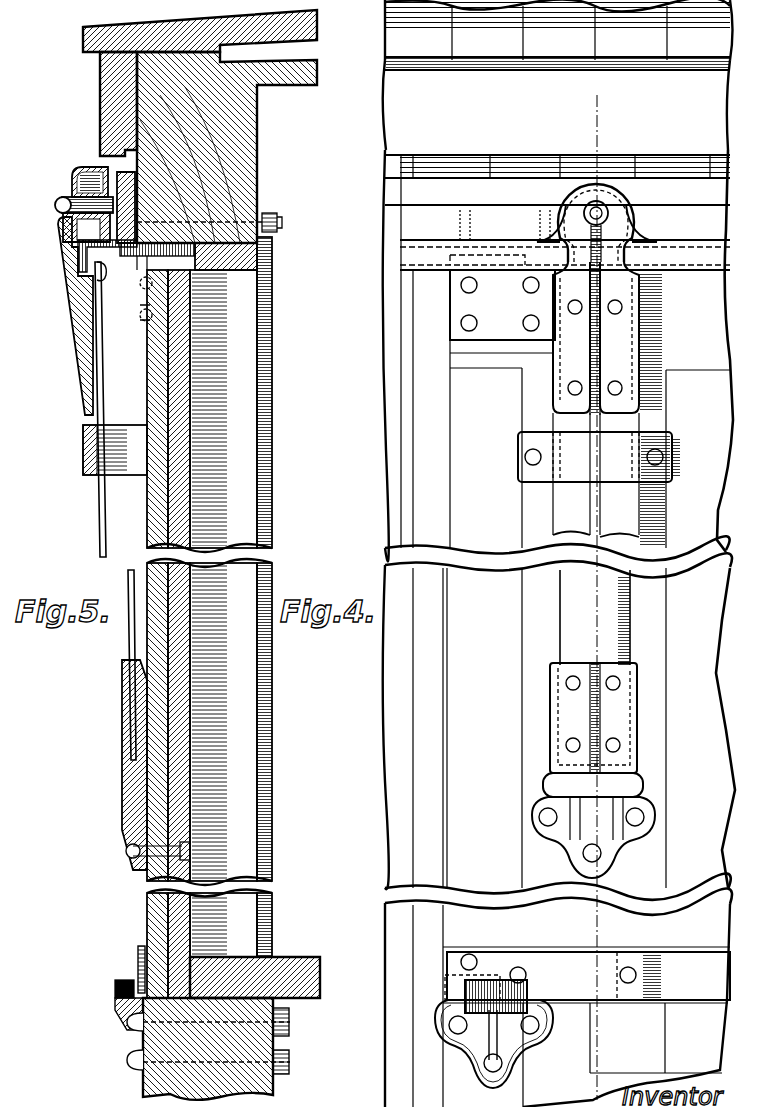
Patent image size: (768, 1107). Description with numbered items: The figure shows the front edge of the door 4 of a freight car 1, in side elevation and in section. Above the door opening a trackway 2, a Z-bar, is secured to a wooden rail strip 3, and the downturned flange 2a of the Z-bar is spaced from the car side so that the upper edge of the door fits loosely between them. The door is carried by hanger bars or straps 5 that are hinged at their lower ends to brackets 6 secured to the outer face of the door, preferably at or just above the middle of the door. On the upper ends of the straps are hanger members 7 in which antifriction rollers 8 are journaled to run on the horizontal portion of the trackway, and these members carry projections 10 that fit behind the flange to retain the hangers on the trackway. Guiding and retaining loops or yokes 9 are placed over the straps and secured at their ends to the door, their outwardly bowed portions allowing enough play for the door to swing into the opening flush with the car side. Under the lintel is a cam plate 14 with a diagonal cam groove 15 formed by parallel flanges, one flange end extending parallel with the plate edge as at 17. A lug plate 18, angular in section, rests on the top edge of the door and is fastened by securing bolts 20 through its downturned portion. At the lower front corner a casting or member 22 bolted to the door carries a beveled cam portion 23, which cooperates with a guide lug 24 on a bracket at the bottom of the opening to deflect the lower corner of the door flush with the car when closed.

In FIG. 5, the freight car 1 is at (143, 1060).
In FIG. 4, the freight car 1 is at (430, 1072).
In FIG. 4, the trackway 2 is at (420, 244).
In FIG. 5, the downturned flange 2a is at (86, 252).
In FIG. 4, the downturned flange 2a is at (712, 262).
In FIG. 5, the rail strip 3 is at (130, 178).
In FIG. 4, the rail strip 3 is at (557, 180).
In FIG. 5, the door 4 is at (160, 486).
In FIG. 4, the door 4 is at (690, 720).
In FIG. 5, the hanger bars or straps 5 is at (99, 502).
In FIG. 4, the hanger bars or straps 5 is at (613, 97).
In FIG. 5, the brackets 6 is at (140, 813).
In FIG. 4, the brackets 6 is at (582, 833).
In FIG. 5, the hanger members 7 is at (73, 330).
In FIG. 4, the hanger members 7 is at (574, 368).
In FIG. 5, the antifriction rollers 8 is at (72, 180).
In FIG. 4, the antifriction rollers 8 is at (630, 194).
In FIG. 5, the guiding and retaining loops or yokes 9 is at (84, 456).
In FIG. 4, the guiding and retaining loops or yokes 9 is at (622, 450).
In FIG. 5, the projections 10 is at (100, 282).
In FIG. 5, the cam plate 14 is at (215, 274).
In FIG. 5, the diagonal cam groove 15 is at (133, 257).
In FIG. 5, the parallel extension of flange 17 is at (140, 259).
In FIG. 5, the lug plate 18 is at (222, 285).
In FIG. 4, the lug plate 18 is at (508, 326).
In FIG. 5, the securing bolts 20 is at (142, 322).
In FIG. 4, the securing bolts 20 is at (530, 322).
In FIG. 5, the casting or member 22 is at (137, 962).
In FIG. 4, the casting or member 22 is at (552, 966).
In FIG. 4, the beveled cam portion 23 is at (463, 997).
In FIG. 5, the guide lug 24 is at (115, 990).
In FIG. 4, the guide lug 24 is at (528, 997).